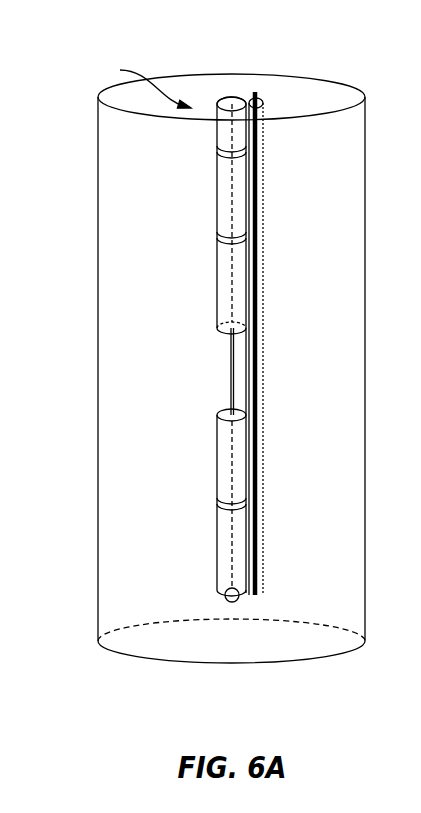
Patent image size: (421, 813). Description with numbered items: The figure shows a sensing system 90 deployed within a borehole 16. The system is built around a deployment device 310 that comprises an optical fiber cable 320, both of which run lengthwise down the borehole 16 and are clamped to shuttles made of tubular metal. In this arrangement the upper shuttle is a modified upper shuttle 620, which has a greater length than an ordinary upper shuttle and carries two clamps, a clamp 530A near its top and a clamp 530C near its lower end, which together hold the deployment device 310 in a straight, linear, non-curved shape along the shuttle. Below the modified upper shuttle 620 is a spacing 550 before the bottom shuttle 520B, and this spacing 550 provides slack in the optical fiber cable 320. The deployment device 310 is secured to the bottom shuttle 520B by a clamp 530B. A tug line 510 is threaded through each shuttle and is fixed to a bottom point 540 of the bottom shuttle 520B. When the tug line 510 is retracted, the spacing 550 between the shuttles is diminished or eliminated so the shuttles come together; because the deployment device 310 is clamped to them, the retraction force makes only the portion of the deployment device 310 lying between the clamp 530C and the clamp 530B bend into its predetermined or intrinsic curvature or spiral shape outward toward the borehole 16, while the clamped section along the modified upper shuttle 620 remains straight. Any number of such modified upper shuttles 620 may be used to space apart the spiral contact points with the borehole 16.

The borehole 16 is at (98, 370).
The sensing system 90 is at (139, 83).
The tug line 510 is at (219, 101).
The optical fiber cable 320 is at (259, 94).
The deployment device 310 is at (263, 175).
The clamp 530A is at (215, 152).
The modified upper shuttle 620 is at (215, 193).
The clamp 530C is at (215, 236).
The spacing 550 is at (208, 312).
The bottom shuttle 520B is at (215, 455).
The clamp 530B is at (215, 502).
The bottom point 540 is at (225, 593).